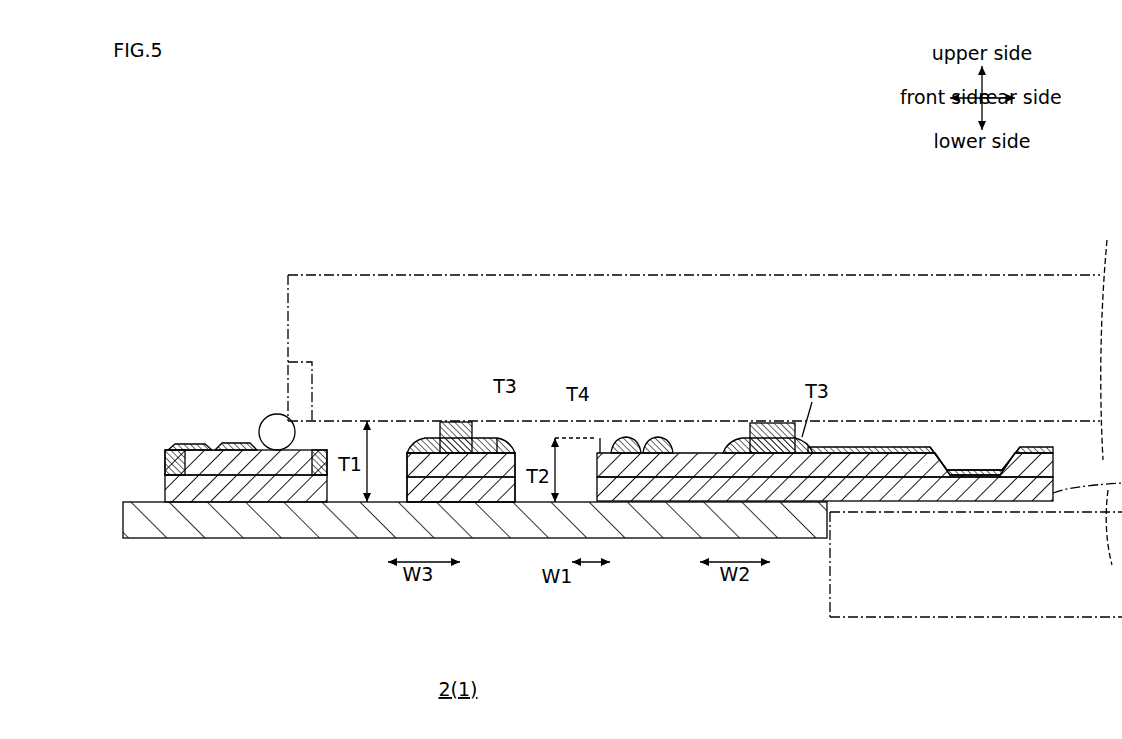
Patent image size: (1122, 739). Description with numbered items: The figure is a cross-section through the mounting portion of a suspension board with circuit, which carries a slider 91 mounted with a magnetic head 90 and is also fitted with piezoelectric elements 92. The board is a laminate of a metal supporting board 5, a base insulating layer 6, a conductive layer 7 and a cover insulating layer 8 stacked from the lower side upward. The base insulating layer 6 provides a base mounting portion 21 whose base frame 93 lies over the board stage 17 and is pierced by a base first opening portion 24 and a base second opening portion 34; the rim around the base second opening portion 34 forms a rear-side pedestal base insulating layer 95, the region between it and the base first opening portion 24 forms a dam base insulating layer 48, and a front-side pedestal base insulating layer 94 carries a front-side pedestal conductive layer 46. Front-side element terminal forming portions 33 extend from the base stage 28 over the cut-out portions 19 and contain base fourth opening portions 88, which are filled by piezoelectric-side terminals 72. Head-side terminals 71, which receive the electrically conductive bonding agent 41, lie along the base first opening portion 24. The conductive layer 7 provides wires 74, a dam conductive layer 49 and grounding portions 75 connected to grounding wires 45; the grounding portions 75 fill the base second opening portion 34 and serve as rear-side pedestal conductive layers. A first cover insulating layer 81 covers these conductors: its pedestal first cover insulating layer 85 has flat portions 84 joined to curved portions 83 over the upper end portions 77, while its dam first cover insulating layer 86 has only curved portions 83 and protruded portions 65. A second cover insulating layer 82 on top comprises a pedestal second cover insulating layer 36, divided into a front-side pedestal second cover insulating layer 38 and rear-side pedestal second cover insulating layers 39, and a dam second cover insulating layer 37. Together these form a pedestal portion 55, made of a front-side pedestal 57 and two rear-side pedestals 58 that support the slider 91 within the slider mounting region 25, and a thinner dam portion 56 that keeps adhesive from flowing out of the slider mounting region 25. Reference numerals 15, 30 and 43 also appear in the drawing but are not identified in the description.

The metal supporting board 5 is at (128, 522).
The base insulating layer 6 is at (165, 490).
The conductive layer 7 is at (165, 466).
The cover insulating layer 8 is at (168, 452).
The main body portion 15 is at (268, 540).
The board stage 17 is at (378, 545).
The cut-out portions 19 is at (828, 525).
The base mounting portion 21 is at (165, 545).
The base first opening portion 24 is at (330, 505).
The slider mounting region 25 is at (507, 503).
The base stage 28 is at (214, 504).
The insulating layer 30 is at (876, 512).
The front-side element terminal forming portions 33 is at (879, 604).
The base second opening portions 34 is at (772, 545).
The pedestal second cover insulating layer 36 is at (477, 436).
The dam second cover insulating layer 37 is at (652, 334).
The front-side pedestal second cover insulating layer 38 is at (538, 316).
The rear-side pedestal second cover insulating layers 39 is at (790, 436).
The electrically conductive bonding agent 41 is at (263, 420).
The bump 43 is at (168, 412).
The grounding wires 45 is at (935, 450).
The front-side pedestal conductive layer 46 is at (503, 505).
The dam base insulating layer 48 is at (673, 503).
The dam conductive layer 49 is at (647, 503).
The pedestal portion 55 is at (636, 227).
The dam portion 56 is at (637, 438).
The front-side pedestal 57 is at (445, 421).
The rear-side pedestals 58 is at (800, 436).
The protruded portions 65 is at (625, 437).
The head-side terminals 71 is at (253, 449).
The piezoelectric-side terminals 72 is at (975, 497).
The wires 74 is at (183, 449).
The grounding portions 75 is at (813, 448).
The upper end portions 77 is at (408, 458).
The first cover insulating layer 81 is at (124, 455).
The second cover insulating layer 82 is at (667, 437).
The curved portions 83 is at (418, 446).
The flat portions 84 is at (450, 426).
The pedestal first cover insulating layer 85 is at (517, 450).
The dam first cover insulating layer 86 is at (665, 438).
The base fourth opening portions 88 is at (928, 500).
The magnetic head 90 is at (288, 381).
The slider 91 is at (336, 275).
The piezoelectric elements 92 is at (1078, 618).
The base frame 93 is at (402, 548).
The front-side pedestal base insulating layer 94 is at (495, 505).
The rear-side pedestal base insulating layer 95 is at (800, 505).